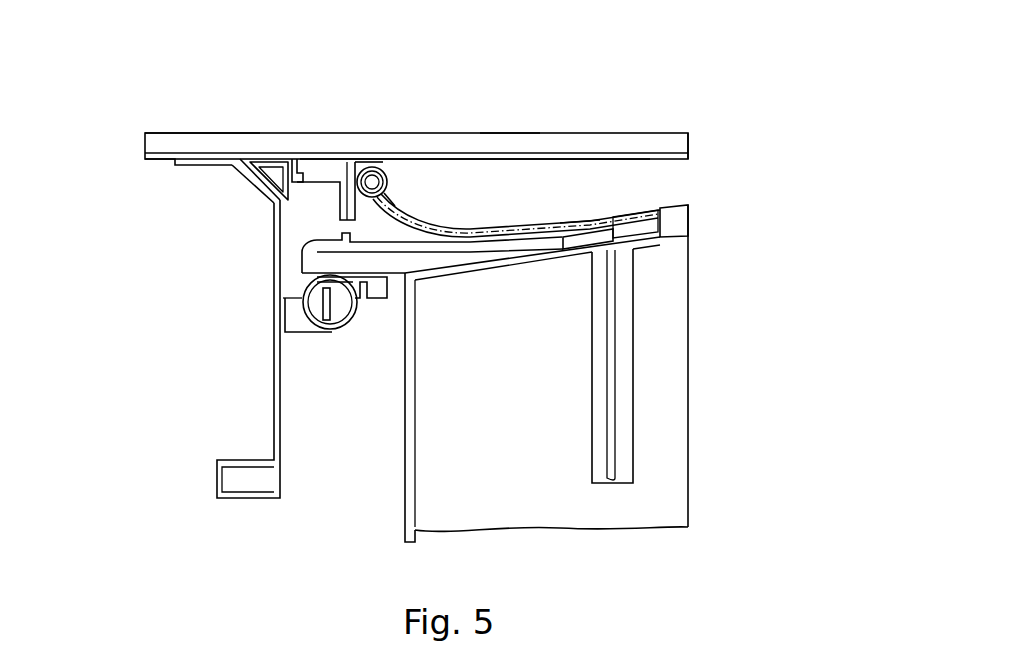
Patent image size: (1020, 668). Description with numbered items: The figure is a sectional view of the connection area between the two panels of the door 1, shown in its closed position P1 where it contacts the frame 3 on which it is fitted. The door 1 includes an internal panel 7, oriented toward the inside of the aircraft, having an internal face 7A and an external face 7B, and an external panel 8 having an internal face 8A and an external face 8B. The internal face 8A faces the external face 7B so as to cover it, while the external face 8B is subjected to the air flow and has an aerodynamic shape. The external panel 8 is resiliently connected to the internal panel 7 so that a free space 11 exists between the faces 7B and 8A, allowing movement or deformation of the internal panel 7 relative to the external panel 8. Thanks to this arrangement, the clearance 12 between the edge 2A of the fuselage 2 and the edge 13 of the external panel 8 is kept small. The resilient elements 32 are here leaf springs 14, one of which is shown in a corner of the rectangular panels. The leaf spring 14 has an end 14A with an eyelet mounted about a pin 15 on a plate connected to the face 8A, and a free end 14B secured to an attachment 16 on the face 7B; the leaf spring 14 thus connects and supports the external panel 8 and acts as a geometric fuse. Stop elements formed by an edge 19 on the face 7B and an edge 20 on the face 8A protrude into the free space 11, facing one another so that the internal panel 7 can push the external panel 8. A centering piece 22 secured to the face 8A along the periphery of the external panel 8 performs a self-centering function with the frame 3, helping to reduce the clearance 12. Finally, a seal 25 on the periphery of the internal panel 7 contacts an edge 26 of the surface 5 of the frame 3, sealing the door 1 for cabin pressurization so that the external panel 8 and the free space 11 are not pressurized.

The door 1 is at (714, 104).
The closed position P1 is at (784, 102).
The fuselage 2 is at (173, 140).
The edge of the fuselage 2A is at (212, 135).
The frame 3 is at (276, 378).
The surface of the frame 5 is at (286, 412).
The internal panel 7 is at (656, 362).
The internal face of the internal panel 7A is at (647, 533).
The external face of the internal panel 7B is at (670, 222).
The external panel 8 is at (541, 145).
The internal face of the external panel 8A is at (640, 168).
The external face of the external panel 8B is at (648, 130).
The free space 11 is at (508, 135).
The clearance 12 is at (222, 145).
The edge of the external panel 13 is at (243, 145).
The leaf spring 14 is at (497, 188).
The end with an eyelet 14A is at (414, 206).
The free end 14B is at (584, 222).
The pin 15 is at (372, 182).
The attachment 16 is at (620, 243).
The edge 19 is at (316, 248).
The edge 20 is at (345, 220).
The centering piece 22 is at (290, 133).
The seal 25 is at (345, 320).
The edge of the surface of the frame 26 is at (310, 302).
The resilient element 32 is at (445, 226).